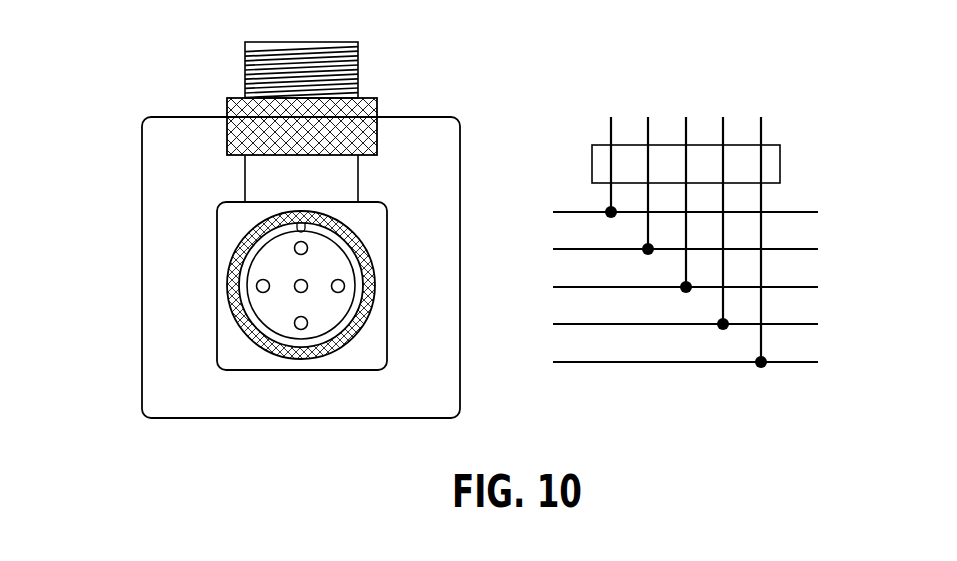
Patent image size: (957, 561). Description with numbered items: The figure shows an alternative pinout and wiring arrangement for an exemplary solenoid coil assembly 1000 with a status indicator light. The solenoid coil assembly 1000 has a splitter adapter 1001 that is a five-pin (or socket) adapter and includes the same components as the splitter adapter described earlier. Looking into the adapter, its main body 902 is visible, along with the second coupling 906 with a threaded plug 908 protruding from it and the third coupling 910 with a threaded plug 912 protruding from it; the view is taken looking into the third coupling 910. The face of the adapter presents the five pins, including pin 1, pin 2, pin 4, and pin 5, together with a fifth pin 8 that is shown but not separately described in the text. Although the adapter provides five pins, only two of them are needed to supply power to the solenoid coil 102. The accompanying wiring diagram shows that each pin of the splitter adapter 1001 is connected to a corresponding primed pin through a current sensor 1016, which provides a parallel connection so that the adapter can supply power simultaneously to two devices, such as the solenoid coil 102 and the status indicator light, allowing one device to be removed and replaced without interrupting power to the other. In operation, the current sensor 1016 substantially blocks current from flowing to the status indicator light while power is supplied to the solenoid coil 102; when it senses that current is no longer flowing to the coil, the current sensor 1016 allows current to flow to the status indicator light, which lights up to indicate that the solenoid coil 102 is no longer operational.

The solenoid coil assembly 1000 is at (80, 109).
The solenoid coil 102 is at (119, 259).
The threaded plug 908 is at (358, 52).
The second coupling 906 is at (377, 108).
The main body 902 is at (387, 222).
The splitter adapter 1001 is at (184, 197).
The third coupling 910 is at (377, 285).
The threaded plug 912 is at (335, 343).
The pin 1 is at (297, 245).
The pin 2 is at (258, 291).
The pin 4 is at (345, 289).
The pin 5 is at (296, 283).
The pin 8 is at (299, 329).
The current sensor 1016 is at (592, 163).